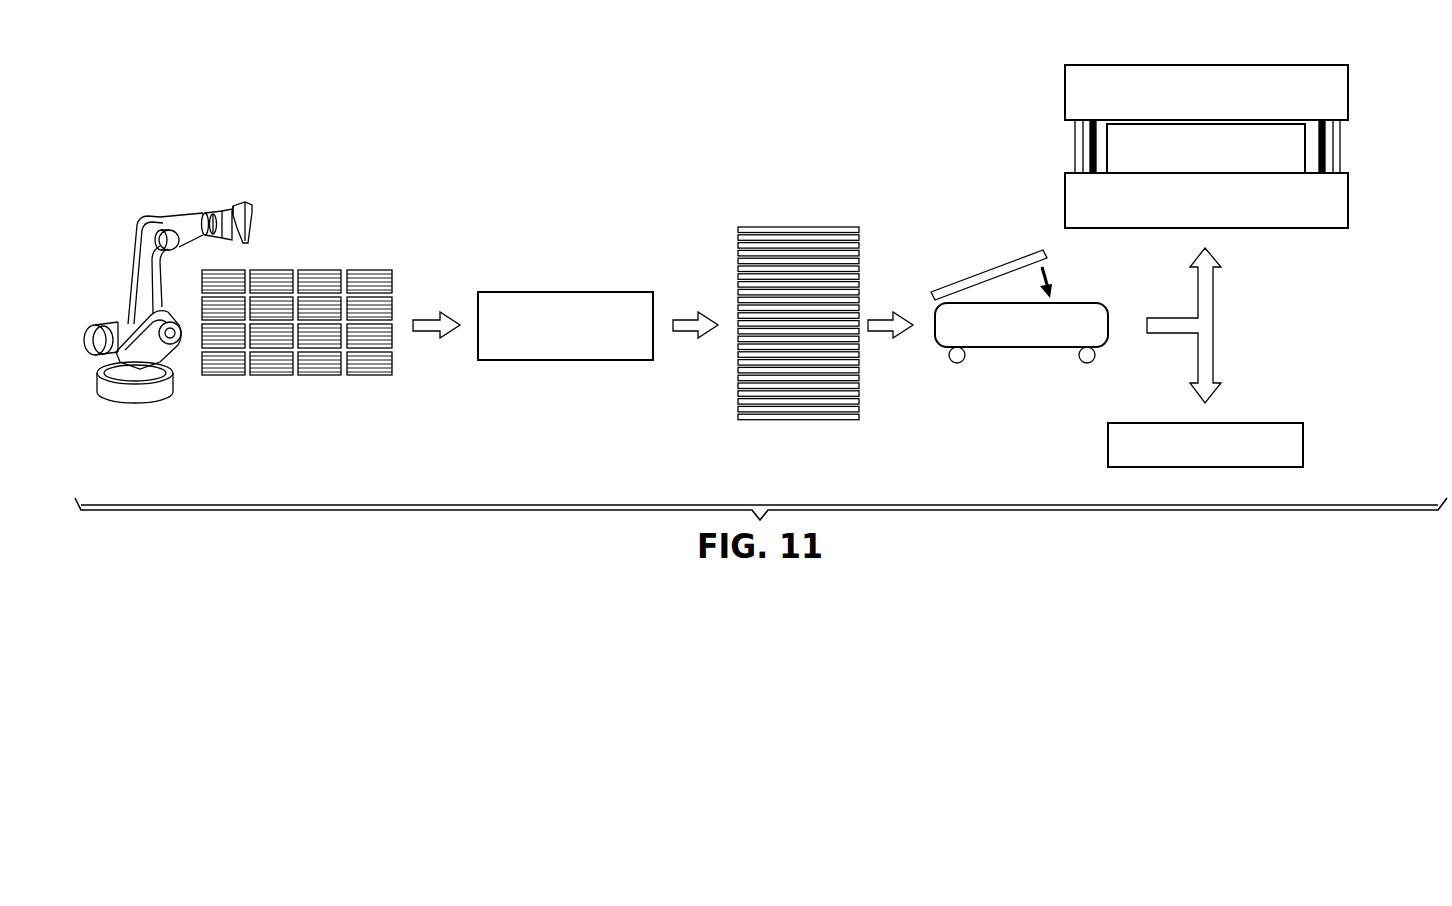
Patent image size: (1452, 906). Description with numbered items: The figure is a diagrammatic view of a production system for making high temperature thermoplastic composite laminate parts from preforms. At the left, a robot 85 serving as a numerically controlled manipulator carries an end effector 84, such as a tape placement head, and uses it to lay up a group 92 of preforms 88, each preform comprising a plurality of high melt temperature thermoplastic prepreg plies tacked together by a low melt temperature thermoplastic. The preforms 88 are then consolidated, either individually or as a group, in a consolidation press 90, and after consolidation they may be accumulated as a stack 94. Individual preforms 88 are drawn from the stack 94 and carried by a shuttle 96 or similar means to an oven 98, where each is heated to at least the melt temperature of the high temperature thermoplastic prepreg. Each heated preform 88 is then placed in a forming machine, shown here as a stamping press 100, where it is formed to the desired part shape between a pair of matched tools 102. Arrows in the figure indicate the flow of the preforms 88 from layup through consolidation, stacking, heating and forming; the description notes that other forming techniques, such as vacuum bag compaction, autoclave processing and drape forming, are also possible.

The end effector 84 is at (245, 212).
The robot 85 is at (116, 231).
The preforms 88 is at (273, 378).
The consolidation press 90 is at (566, 292).
The group 92 is at (393, 230).
The stack 94 is at (745, 212).
The shuttle 96 is at (1023, 340).
The oven 98 is at (1305, 443).
The stamping press 100 is at (1374, 125).
The matched tools 102 is at (1107, 150).